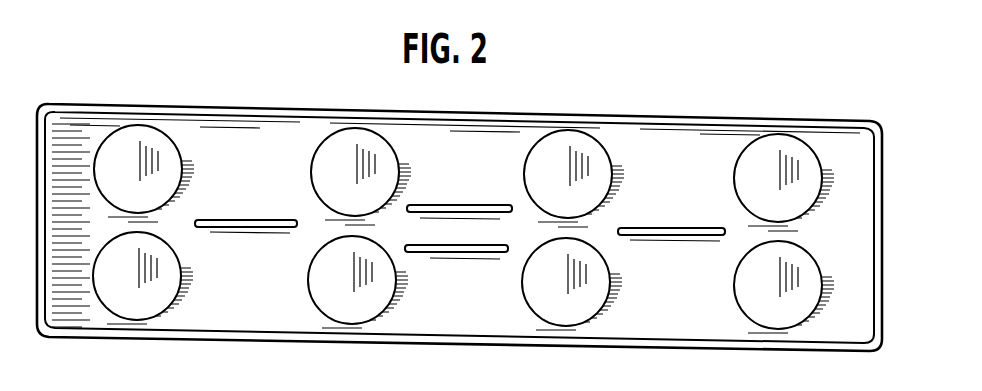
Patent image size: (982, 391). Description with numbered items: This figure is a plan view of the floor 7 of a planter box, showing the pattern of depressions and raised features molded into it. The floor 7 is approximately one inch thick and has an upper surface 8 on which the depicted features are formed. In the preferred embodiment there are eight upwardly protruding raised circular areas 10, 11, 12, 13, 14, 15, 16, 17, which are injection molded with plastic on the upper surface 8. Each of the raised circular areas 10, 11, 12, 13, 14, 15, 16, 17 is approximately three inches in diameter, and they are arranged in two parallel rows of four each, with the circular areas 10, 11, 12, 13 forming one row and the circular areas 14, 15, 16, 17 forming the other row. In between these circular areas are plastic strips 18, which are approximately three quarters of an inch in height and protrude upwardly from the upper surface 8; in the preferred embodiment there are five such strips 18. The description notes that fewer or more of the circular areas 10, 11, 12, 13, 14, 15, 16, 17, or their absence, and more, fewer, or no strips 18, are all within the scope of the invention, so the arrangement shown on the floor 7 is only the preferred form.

The floor 7 is at (828, 119).
The upper surface 8 is at (273, 323).
The raised circular area 10 is at (180, 149).
The raised circular area 11 is at (388, 158).
The raised circular area 12 is at (602, 142).
The raised circular area 13 is at (773, 132).
The raised circular area 14 is at (135, 320).
The raised circular area 15 is at (345, 318).
The raised circular area 16 is at (540, 320).
The raised circular area 17 is at (747, 315).
The plastic strips 18 is at (470, 207).